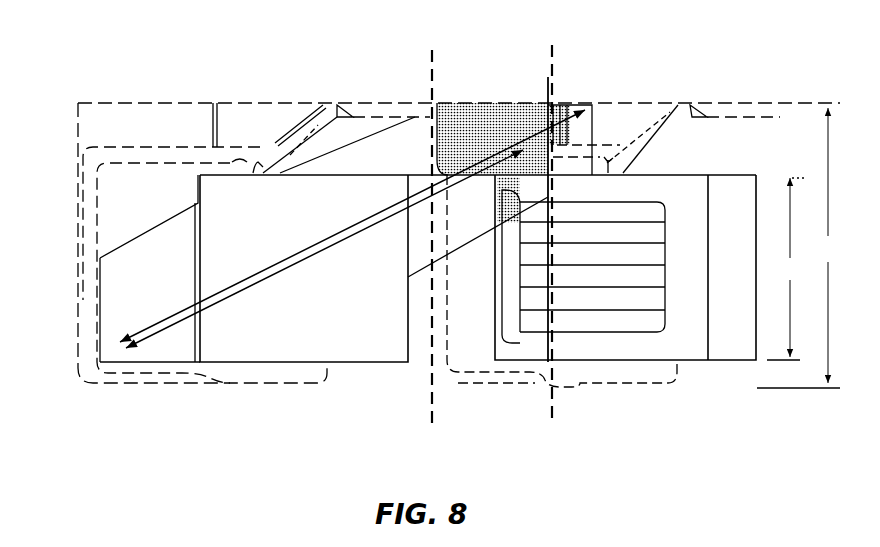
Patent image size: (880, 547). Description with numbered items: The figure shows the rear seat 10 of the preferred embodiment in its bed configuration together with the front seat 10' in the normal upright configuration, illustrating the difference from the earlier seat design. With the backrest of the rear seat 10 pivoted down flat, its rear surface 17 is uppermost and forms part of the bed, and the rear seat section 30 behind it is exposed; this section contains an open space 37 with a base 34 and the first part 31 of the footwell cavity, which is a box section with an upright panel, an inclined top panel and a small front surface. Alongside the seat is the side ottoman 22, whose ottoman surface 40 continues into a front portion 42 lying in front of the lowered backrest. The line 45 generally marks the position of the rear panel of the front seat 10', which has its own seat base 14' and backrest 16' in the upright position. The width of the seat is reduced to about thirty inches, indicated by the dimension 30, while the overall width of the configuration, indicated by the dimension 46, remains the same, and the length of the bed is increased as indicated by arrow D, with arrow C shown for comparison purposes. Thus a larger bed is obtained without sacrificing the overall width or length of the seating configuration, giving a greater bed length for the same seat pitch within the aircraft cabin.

The first part of footwell cavity 31 is at (163, 192).
The ottoman surface 40 is at (380, 153).
The line 45 is at (432, 229).
The side ottoman 22 is at (413, 157).
The front portion 42 is at (548, 100).
The seat 10 is at (478, 318).
The rear surface 17 is at (360, 340).
The open space 37 is at (163, 265).
The base 34 is at (170, 300).
The front seat 10' is at (625, 318).
The seat base 14' is at (595, 332).
The backrest 16' is at (542, 254).
The arrow D is at (297, 250).
The arrow C is at (343, 245).
The height dimension 46 inches 46 is at (799, 248).
The rear seat section 30 is at (786, 269).